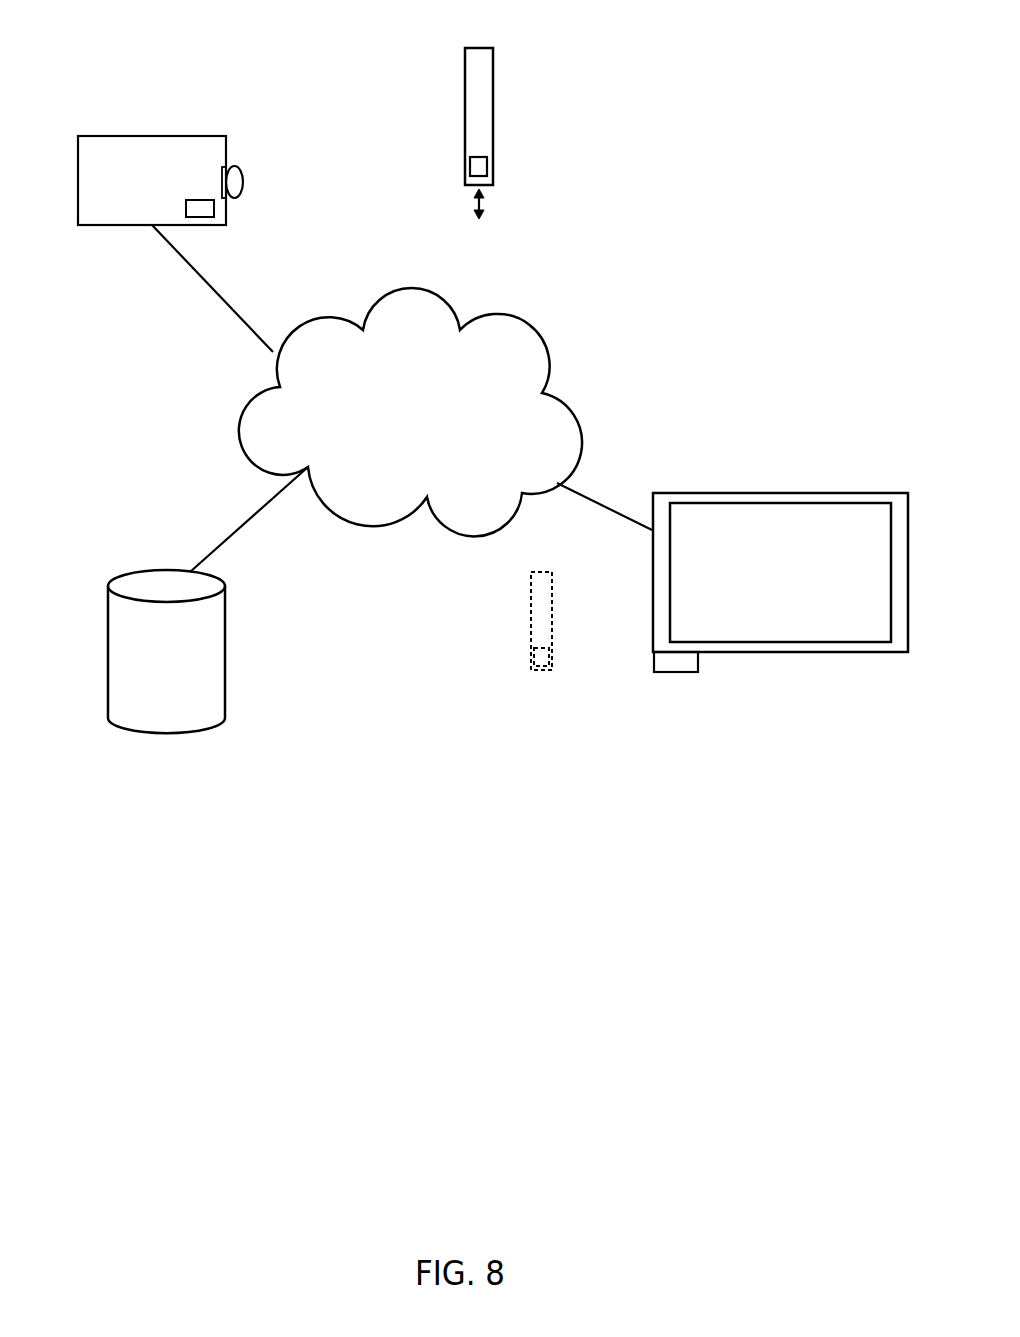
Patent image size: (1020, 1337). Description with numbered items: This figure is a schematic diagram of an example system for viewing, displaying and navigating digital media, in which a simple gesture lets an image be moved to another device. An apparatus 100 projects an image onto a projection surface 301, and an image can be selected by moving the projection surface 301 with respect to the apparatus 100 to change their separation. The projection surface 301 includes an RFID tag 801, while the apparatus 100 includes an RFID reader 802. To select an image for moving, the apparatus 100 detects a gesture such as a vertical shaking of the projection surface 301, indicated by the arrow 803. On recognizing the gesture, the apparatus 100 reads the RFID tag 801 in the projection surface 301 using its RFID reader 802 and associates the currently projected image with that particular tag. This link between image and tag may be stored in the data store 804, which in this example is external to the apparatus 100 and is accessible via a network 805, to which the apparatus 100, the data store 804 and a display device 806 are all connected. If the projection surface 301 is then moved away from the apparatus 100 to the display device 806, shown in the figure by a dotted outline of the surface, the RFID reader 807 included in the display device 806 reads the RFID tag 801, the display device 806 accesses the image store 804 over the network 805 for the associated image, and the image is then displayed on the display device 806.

The apparatus 100 is at (176, 137).
The projection surface 301 is at (490, 63).
The RFID tag 801 is at (474, 161).
The RFID reader 802 is at (203, 222).
The arrow 803 is at (492, 203).
The data store 804 is at (108, 630).
The network 805 is at (410, 412).
The display device 806 is at (808, 653).
The RFID reader 807 is at (677, 673).